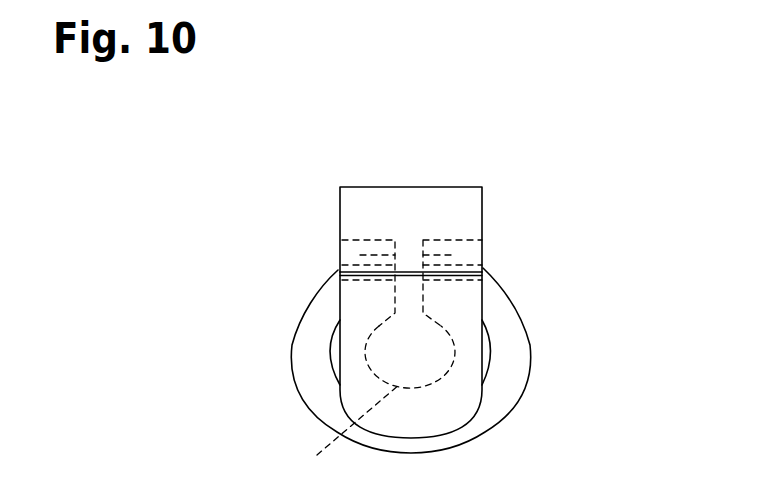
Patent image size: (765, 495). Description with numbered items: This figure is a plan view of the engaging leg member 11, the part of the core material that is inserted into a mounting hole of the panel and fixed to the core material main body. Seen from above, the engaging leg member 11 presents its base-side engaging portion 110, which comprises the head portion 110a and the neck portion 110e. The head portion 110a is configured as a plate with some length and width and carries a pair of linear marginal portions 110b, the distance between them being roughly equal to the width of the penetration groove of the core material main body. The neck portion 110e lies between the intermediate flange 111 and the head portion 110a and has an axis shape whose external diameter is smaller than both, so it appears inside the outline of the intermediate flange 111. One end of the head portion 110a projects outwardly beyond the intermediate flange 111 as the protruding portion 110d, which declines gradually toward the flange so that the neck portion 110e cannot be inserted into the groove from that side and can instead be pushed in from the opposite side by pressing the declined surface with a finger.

The engaging leg member 11 is at (522, 207).
The base-side engaging portion 110 is at (511, 320).
The head portion 110a is at (470, 375).
The linear marginal portions 110b is at (338, 302).
The protruding portion 110d is at (410, 203).
The neck portion 110e is at (341, 435).
The intermediate flange 111 is at (497, 403).